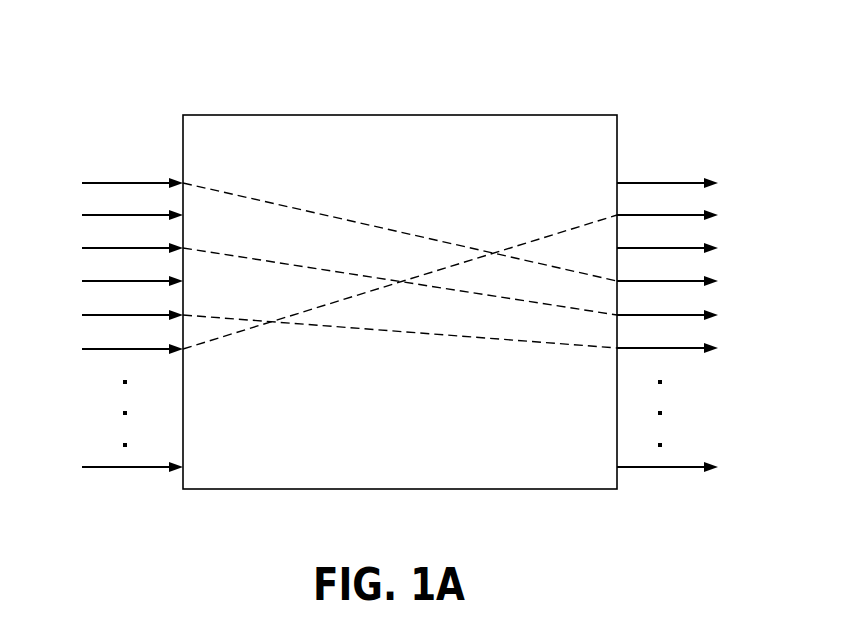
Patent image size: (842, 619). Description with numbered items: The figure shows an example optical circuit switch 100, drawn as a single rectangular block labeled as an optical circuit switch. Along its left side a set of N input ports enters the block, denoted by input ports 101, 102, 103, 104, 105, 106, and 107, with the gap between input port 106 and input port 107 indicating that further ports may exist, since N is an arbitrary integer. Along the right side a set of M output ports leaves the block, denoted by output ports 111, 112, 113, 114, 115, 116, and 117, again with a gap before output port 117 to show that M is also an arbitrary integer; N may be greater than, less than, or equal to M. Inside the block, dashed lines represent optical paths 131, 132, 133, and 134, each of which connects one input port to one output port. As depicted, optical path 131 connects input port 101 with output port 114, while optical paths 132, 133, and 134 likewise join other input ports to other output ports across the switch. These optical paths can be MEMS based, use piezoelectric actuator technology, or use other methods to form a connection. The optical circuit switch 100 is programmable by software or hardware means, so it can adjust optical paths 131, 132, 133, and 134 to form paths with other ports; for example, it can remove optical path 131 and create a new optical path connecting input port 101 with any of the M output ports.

The optical circuit switch 100 is at (400, 302).
The input port 101 is at (114, 184).
The input port 102 is at (114, 216).
The input port 103 is at (114, 249).
The input port 104 is at (114, 282).
The input port 105 is at (114, 316).
The input port 106 is at (114, 350).
The input port 107 is at (114, 468).
The output port 111 is at (686, 184).
The output port 112 is at (686, 216).
The output port 113 is at (686, 249).
The output port 114 is at (686, 282).
The output port 115 is at (686, 316).
The output port 116 is at (686, 349).
The output port 117 is at (686, 468).
The optical path 131 is at (209, 171).
The optical path 132 is at (252, 241).
The optical path 133 is at (549, 332).
The optical path 134 is at (550, 219).